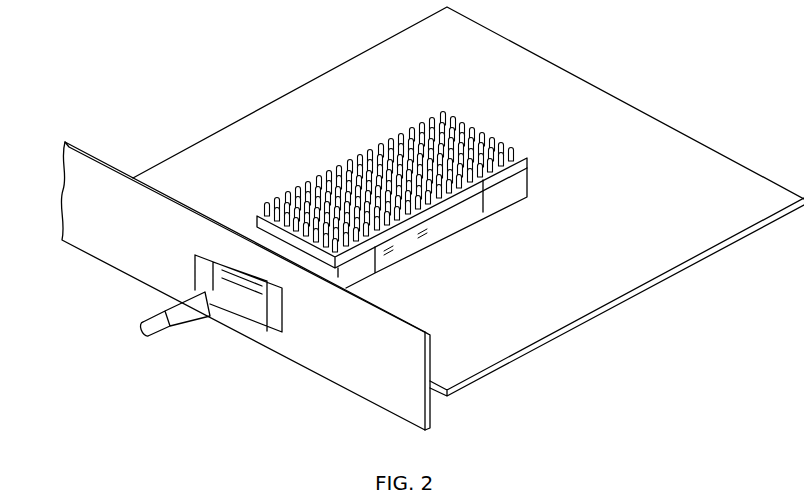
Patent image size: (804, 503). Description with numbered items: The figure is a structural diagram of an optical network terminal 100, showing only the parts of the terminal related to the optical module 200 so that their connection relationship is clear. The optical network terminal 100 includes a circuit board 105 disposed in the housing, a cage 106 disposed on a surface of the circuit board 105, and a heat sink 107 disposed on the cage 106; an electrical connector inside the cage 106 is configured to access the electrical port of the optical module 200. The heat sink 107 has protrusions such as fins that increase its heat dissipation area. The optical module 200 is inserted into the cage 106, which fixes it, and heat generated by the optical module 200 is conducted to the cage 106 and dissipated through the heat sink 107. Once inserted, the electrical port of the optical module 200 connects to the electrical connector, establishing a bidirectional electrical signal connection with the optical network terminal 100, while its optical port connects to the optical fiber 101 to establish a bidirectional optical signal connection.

The optical network terminal 100 is at (213, 94).
The optical fiber 101 is at (175, 312).
The circuit board 105 is at (500, 335).
The cage 106 is at (453, 213).
The heat sink 107 is at (350, 163).
The optical module 200 is at (274, 312).